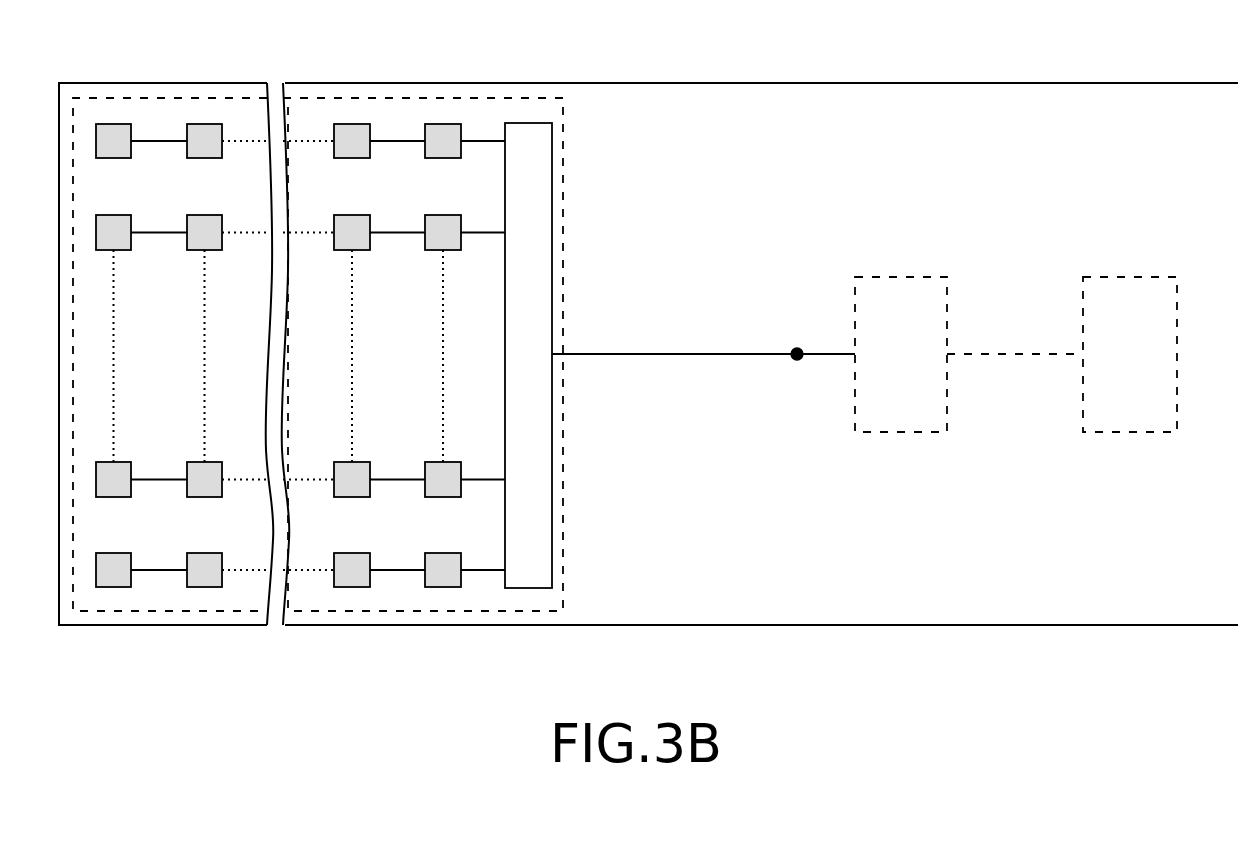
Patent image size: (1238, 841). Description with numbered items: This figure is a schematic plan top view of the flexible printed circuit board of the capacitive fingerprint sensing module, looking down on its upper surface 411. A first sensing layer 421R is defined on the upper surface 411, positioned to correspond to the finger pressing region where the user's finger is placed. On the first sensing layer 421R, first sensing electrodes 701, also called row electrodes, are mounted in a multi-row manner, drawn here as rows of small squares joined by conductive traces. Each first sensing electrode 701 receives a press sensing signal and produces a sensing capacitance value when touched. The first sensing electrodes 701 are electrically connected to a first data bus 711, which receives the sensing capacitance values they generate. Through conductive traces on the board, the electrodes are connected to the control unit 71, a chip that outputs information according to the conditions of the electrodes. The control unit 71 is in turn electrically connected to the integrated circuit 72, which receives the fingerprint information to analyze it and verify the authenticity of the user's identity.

The first sensing electrodes 701 is at (141, 132).
The first sensing layer 421R is at (458, 95).
The upper surface 411 is at (1058, 106).
The first data bus 711 is at (533, 492).
The control unit 71 is at (900, 295).
The integrated circuit 72 is at (1128, 295).